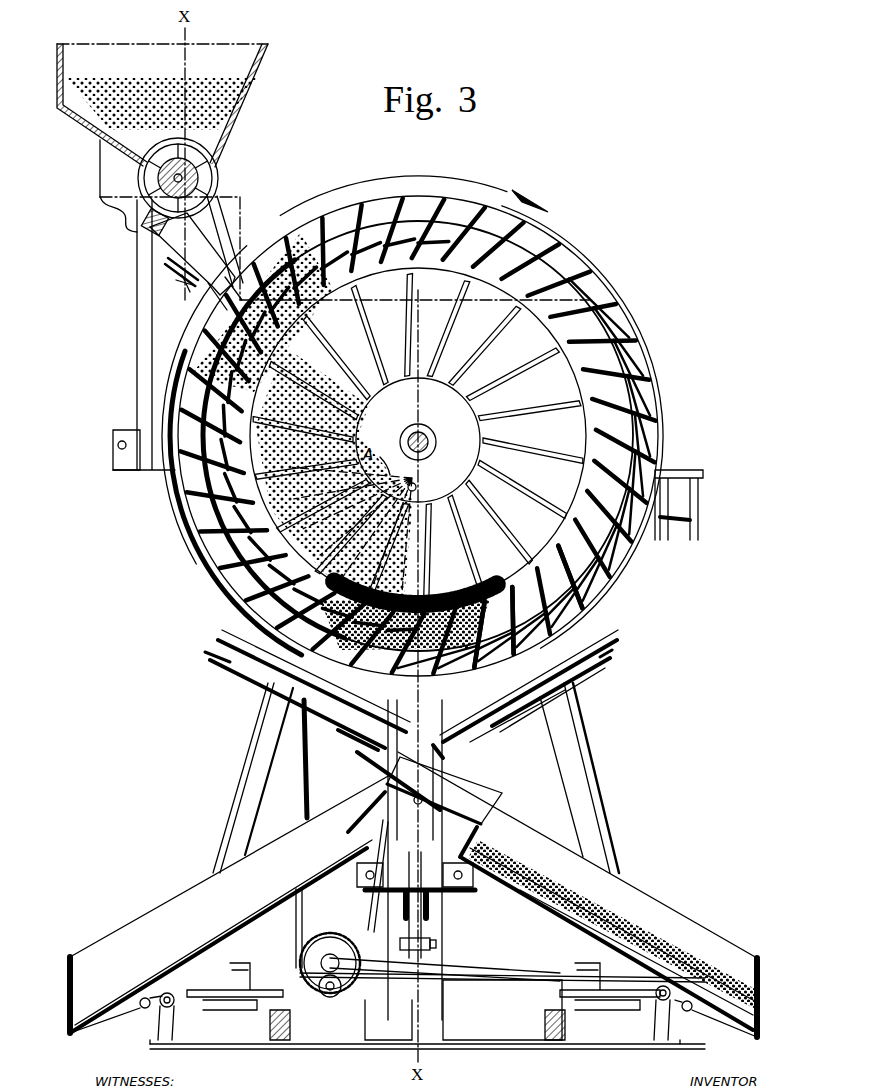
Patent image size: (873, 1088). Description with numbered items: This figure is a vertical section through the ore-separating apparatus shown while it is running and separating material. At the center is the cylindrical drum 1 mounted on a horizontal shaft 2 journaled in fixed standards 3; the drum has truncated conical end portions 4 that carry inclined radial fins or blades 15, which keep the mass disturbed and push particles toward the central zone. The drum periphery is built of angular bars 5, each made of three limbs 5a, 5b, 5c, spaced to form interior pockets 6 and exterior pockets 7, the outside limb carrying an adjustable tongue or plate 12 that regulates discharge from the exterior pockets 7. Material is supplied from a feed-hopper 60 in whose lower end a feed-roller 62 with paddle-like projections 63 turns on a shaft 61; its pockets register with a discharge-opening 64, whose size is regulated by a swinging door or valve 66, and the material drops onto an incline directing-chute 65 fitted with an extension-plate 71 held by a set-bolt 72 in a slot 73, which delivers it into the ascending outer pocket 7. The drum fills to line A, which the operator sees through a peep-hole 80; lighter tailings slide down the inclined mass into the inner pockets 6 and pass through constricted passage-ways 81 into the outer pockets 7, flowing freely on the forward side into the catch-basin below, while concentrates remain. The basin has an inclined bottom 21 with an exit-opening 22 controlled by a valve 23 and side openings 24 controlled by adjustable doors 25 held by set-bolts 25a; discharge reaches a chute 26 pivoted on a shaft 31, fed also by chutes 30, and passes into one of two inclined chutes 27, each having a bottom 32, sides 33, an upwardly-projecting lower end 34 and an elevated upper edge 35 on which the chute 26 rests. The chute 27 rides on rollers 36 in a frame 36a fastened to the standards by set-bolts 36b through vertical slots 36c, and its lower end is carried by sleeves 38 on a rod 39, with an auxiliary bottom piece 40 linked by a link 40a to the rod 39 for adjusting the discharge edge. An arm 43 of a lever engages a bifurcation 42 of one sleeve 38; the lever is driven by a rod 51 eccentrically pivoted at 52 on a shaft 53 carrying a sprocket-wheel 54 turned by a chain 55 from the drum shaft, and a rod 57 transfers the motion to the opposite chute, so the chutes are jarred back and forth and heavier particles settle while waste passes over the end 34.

The cylindrical drum 1 is at (418, 437).
The horizontal shaft 2 is at (437, 445).
The fixed standards 3 is at (232, 842).
The truncated conical-shaped end portions 4 is at (420, 300).
The angular bars 5 is at (597, 312).
The limb of angular bar 5a is at (528, 558).
The limb of angular bar 5b is at (575, 603).
The limb of angular bar 5c is at (582, 627).
The interior pockets 6 is at (478, 318).
The exterior pockets 7 is at (583, 270).
The adjustable tongue or plate 12 is at (658, 440).
The inclined radial fins or blades 15 is at (528, 395).
The inclined bottom 21 is at (340, 705).
The exit-opening 22 is at (385, 775).
The valve 23 is at (348, 740).
The openings 24 is at (615, 660).
The adjustable doors or valves 25 is at (250, 672).
The set-bolts 25a is at (212, 660).
The chute 26 is at (444, 790).
The inclined chutes 27 is at (545, 822).
The chutes 30 is at (290, 700).
The shaft 31 is at (413, 801).
The bottom 32 is at (240, 925).
The sides 33 is at (636, 880).
The lower upwardly-projecting end 34 is at (66, 983).
The slightly-elevated upper edge 35 is at (358, 836).
The rollers 36 is at (368, 888).
The frame 36a is at (404, 908).
The set-bolts 36b is at (436, 945).
The vertical slots 36c is at (428, 928).
The sleeves 38 is at (172, 1006).
The shaft or rod 39 is at (168, 1040).
The auxiliary bottom piece 40 is at (85, 1030).
The link 40a is at (150, 1009).
The bifurcation 42 is at (200, 1040).
The arm 43 is at (255, 1010).
The rod 51 is at (370, 962).
The eccentric pivot 52 is at (325, 936).
The shaft 53 is at (332, 990).
The sprocket-wheel 54 is at (340, 945).
The chain 55 is at (300, 812).
The rod 57 is at (545, 968).
The feed-hopper 60 is at (132, 46).
The shaft 61 is at (160, 168).
The feed-roller 62 is at (150, 172).
The paddle-like projections 63 is at (142, 188).
The discharge-opening 64 is at (148, 230).
The incline directing-chute 65 is at (165, 240).
The swinging door or valve 66 is at (225, 220).
The extension-plate 71 is at (215, 300).
The set-bolt 72 is at (184, 287).
The slot 73 is at (170, 270).
The peep-hole 80 is at (417, 488).
The constricted passage-ways 81 is at (560, 698).